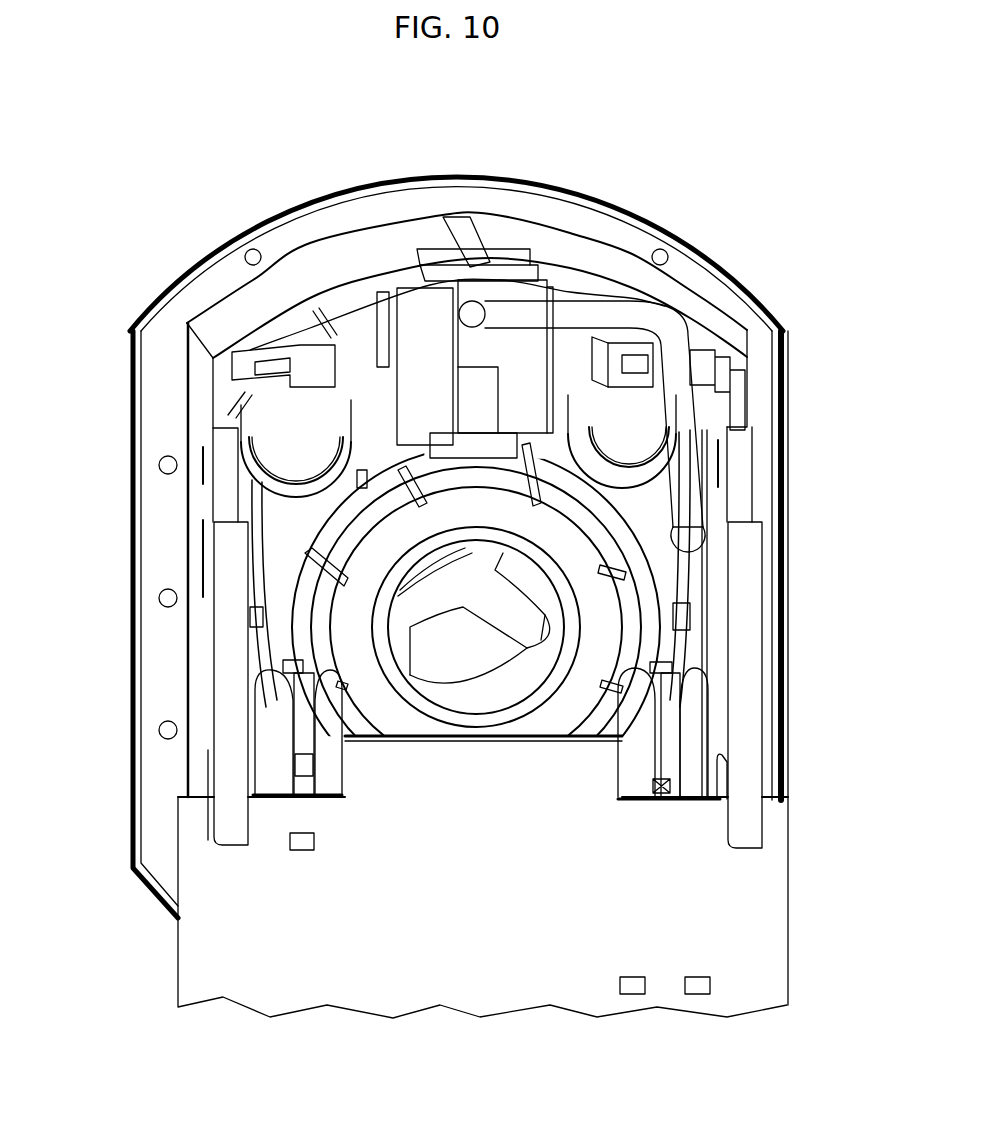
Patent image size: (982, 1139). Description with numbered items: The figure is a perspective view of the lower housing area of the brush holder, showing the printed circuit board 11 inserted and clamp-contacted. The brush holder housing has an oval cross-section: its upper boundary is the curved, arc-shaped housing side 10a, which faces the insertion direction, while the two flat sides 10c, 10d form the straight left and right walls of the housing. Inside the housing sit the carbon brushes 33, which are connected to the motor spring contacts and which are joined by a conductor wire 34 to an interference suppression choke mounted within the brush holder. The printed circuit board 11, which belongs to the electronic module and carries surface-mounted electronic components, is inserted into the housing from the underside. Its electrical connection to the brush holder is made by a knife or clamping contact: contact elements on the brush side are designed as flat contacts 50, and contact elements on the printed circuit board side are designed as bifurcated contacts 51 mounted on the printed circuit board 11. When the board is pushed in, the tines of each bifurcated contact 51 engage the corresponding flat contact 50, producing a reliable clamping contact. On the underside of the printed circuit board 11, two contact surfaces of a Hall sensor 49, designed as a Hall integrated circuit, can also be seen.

The curved housing side 10a is at (404, 152).
The flat side 10c is at (103, 553).
The flat side 10d is at (814, 548).
The carbon brush 33 is at (471, 400).
The conductor wire 34 is at (537, 318).
The flat contact 50 is at (307, 745).
The bifurcated contact 51 is at (330, 775).
The printed circuit board 11 is at (483, 990).
The Hall sensor 49 is at (630, 996).